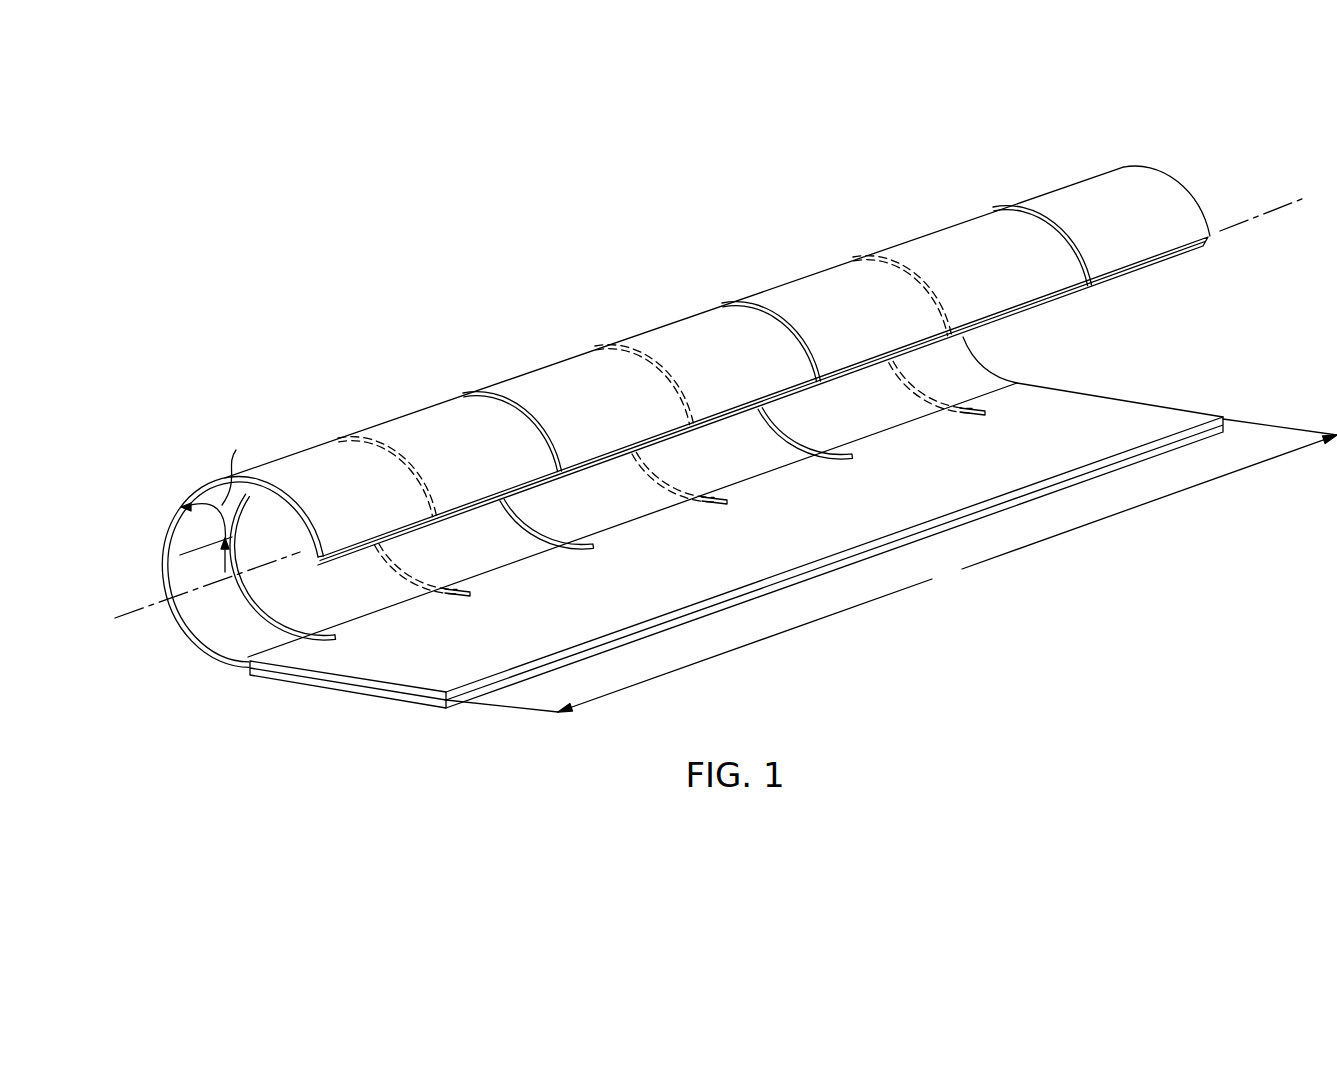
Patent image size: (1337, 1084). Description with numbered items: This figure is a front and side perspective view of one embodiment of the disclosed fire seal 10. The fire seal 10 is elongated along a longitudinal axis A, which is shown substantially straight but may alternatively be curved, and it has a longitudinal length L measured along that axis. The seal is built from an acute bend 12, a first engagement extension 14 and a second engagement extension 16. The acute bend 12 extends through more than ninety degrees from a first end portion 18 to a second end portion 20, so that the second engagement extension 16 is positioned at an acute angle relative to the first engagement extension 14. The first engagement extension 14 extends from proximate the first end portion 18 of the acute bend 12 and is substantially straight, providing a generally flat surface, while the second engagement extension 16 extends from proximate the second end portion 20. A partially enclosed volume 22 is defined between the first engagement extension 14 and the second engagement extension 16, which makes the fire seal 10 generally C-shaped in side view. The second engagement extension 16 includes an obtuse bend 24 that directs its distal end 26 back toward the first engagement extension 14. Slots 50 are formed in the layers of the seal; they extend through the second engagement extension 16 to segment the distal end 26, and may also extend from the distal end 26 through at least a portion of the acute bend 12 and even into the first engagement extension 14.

The fire seal 10 is at (711, 393).
The acute bend 12 is at (160, 556).
The first engagement extension 14 is at (452, 703).
The second engagement extension 16 is at (675, 318).
The first end portion 18 is at (171, 718).
The second end portion 20 is at (214, 469).
The partially enclosed volume 22 is at (1179, 344).
The bend 24 is at (1118, 178).
The distal end 26 is at (1140, 245).
The slots 50 is at (360, 432).
The longitudinal axis A is at (1270, 210).
The longitudinal length L is at (891, 565).